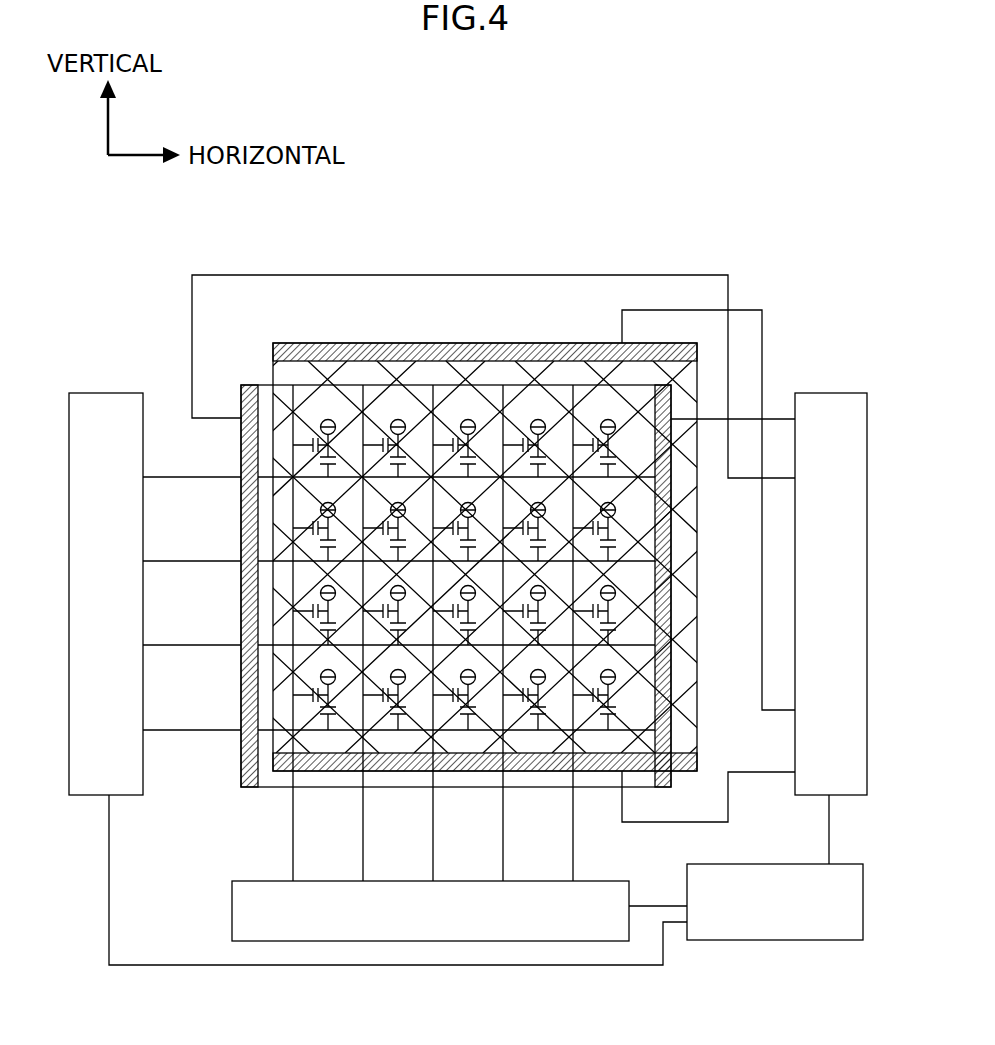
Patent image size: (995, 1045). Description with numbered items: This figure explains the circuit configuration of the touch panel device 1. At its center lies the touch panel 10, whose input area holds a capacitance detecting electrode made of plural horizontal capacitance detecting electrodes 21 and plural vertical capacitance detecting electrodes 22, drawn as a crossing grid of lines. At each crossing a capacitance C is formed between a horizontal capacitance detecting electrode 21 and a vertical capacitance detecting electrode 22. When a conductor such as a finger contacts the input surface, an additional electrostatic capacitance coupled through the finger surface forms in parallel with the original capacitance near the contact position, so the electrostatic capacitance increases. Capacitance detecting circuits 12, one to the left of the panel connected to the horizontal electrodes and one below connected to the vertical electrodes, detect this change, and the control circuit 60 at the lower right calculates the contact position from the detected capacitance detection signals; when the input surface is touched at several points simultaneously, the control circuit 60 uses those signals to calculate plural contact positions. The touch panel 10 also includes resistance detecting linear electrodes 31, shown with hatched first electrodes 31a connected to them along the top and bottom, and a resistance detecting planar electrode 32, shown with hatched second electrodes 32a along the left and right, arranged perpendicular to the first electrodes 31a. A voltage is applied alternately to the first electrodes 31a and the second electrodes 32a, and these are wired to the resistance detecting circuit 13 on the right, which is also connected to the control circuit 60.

The touch panel device 1 is at (442, 176).
The touch panel 10 is at (494, 262).
The capacitance detecting circuit 12 is at (100, 393).
The resistance detecting circuit 13 is at (830, 393).
The horizontal capacitance detecting electrode 21 is at (185, 470).
The vertical capacitance detecting electrode 22 is at (273, 830).
The resistance detecting linear electrode 31 is at (300, 392).
The first electrode 31a is at (427, 343).
The resistance detecting planar electrode 32 is at (250, 385).
The second electrode 32a is at (241, 597).
The control circuit 60 is at (715, 940).
The capacitance C is at (318, 460).